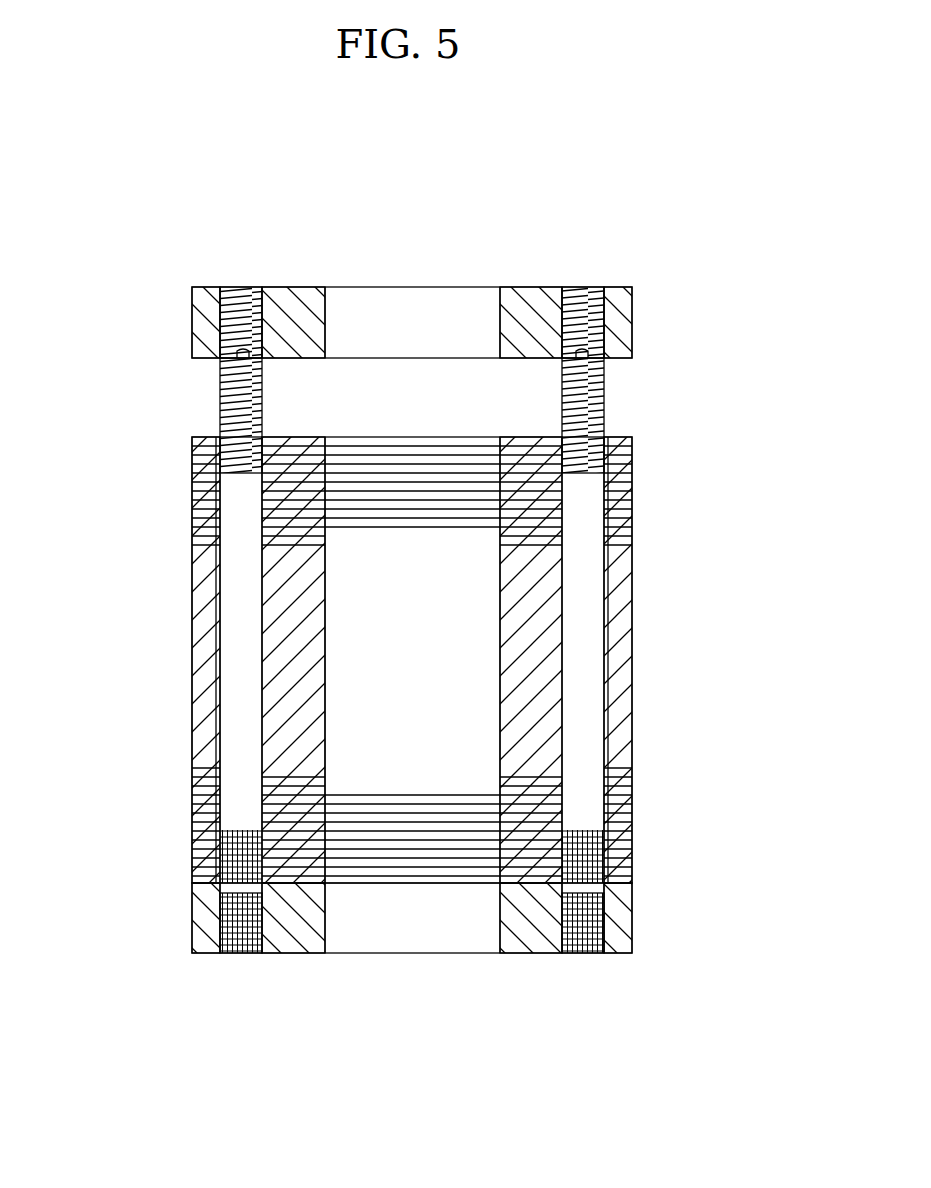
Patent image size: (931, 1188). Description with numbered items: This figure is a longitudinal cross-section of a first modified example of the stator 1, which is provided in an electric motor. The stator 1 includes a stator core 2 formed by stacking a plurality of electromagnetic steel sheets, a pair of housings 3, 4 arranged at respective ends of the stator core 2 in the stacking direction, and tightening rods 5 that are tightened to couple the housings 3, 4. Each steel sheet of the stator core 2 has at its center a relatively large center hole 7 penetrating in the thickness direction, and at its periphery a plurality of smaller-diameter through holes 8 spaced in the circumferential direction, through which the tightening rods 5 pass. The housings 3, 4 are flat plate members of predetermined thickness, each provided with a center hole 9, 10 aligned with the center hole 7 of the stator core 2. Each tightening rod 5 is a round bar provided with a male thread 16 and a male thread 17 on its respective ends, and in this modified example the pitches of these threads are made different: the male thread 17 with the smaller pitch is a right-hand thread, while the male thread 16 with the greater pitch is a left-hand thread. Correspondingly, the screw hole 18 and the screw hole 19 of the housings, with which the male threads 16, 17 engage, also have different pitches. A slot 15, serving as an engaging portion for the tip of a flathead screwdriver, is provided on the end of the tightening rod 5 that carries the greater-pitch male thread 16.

The stator 1 is at (736, 172).
The stator core 2 is at (186, 667).
The housing 3 is at (186, 911).
The housing 4 is at (186, 311).
The tightening rod 5 is at (211, 603).
The center hole 7 is at (492, 716).
The through hole 8 is at (216, 706).
The center hole 9 is at (330, 953).
The center hole 10 is at (330, 300).
The slot 15 is at (241, 351).
The male thread 16 is at (220, 405).
The male thread 17 is at (240, 848).
The screw hole 18 is at (252, 287).
The screw hole 19 is at (240, 940).